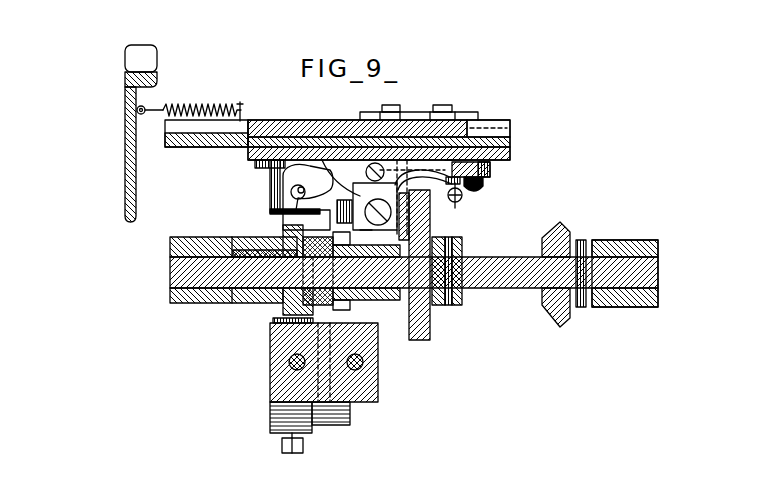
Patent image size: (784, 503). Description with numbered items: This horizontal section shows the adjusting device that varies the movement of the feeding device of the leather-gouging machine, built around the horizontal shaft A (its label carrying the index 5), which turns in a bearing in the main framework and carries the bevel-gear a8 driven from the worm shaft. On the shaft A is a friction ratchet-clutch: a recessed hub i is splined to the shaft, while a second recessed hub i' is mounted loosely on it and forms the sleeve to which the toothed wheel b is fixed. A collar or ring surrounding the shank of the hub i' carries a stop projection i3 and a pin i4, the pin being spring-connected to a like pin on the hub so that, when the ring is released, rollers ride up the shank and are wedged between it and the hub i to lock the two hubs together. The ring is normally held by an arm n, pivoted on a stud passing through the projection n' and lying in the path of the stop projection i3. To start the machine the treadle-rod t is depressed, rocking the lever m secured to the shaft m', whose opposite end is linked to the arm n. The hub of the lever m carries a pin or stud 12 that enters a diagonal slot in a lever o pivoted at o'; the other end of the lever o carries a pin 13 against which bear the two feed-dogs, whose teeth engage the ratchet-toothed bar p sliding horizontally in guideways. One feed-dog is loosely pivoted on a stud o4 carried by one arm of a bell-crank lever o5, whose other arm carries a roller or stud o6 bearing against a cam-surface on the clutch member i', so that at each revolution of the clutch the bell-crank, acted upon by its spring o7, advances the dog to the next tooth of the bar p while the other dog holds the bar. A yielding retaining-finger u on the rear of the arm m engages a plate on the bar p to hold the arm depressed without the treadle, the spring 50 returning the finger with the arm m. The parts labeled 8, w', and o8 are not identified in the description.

The spring 8 is at (230, 107).
The frame w' is at (419, 106).
The ratchet-toothed bar p is at (344, 140).
The pin or stud 12 is at (290, 190).
The lever o is at (303, 191).
The shaft m' is at (279, 213).
The spring o7 is at (341, 176).
The retaining-finger u is at (338, 211).
The stud o4 is at (375, 163).
The pivot o' is at (398, 198).
The bell-crank lever o5 is at (411, 152).
The boss o8 is at (451, 152).
The roller or stud o6 is at (366, 231).
The recessed hub i' is at (399, 216).
The lever m is at (458, 176).
The treadle-rod t is at (481, 188).
The pin 13 is at (447, 189).
The spring 50 is at (457, 203).
The horizontal shaft A is at (170, 262).
The sleeve 5 is at (227, 270).
The recessed hub i is at (295, 266).
The pin i4 is at (366, 266).
The stop projection i3 is at (349, 307).
The toothed wheel b is at (431, 320).
The bevel-gear a8 is at (560, 224).
The arm n is at (324, 383).
The projection n' is at (278, 427).